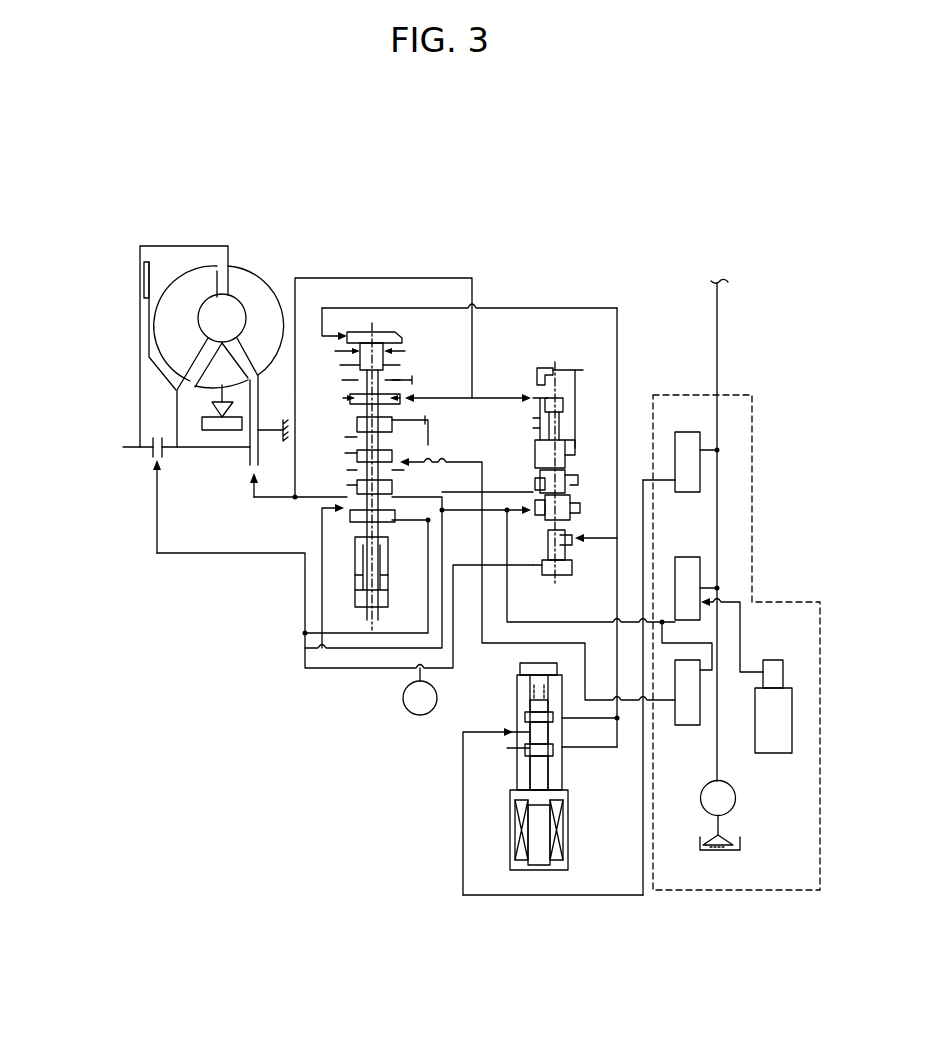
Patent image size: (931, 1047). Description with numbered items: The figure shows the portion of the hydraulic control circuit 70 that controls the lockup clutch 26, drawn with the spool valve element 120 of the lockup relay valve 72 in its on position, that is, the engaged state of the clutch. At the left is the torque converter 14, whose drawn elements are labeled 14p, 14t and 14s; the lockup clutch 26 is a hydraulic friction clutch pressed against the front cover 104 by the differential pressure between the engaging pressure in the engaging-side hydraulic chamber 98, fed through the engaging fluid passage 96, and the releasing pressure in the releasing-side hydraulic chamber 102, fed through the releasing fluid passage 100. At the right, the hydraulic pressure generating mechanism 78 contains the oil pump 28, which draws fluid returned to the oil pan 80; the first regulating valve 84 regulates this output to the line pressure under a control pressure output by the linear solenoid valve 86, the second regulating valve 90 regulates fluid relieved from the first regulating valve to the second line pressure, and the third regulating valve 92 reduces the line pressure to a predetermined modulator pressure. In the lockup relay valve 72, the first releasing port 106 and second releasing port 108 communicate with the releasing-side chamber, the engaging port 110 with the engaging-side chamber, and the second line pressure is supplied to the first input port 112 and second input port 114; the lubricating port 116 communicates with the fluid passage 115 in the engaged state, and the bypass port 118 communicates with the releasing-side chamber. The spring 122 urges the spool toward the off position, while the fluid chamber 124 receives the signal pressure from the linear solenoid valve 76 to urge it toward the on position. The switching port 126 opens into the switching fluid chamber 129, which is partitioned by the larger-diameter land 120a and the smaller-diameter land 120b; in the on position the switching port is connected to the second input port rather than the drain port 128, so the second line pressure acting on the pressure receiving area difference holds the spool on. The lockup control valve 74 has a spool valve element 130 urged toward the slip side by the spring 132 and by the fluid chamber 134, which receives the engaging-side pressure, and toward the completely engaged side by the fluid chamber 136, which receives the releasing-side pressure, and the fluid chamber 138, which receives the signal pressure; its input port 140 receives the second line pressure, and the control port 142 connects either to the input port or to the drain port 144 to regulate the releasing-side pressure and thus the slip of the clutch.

The hydraulic control circuit 70 is at (437, 166).
The torque converter 14 is at (266, 246).
The pump impeller 14p is at (252, 288).
The turbine impeller 14t is at (180, 324).
The stator impeller 14s is at (218, 378).
The engaging-side hydraulic chamber 98 is at (173, 258).
The front cover 104 is at (141, 271).
The lockup clutch 26 is at (128, 293).
The releasing-side hydraulic chamber 102 is at (156, 414).
The engaging fluid passage 96 is at (256, 421).
The releasing fluid passage 100 is at (150, 456).
The lockup relay valve 72 is at (432, 361).
The fluid chamber 124 is at (378, 333).
The land 120b is at (384, 358).
The switching fluid chamber 129 is at (352, 368).
The switching port 126 is at (350, 380).
The drain port 128 is at (403, 370).
The second input port 114 is at (396, 403).
The land 120a is at (357, 410).
The bypass port 118 is at (394, 424).
The spool valve element 120 is at (366, 440).
The first releasing port 106 is at (396, 445).
The engaging port 110 is at (352, 470).
The lubricating port 116 is at (396, 470).
The first input port 112 is at (352, 518).
The second releasing port 108 is at (392, 530).
The spring 122 is at (388, 565).
The lockup control valve 74 is at (562, 346).
The fluid chamber 134 is at (538, 386).
The spring 132 is at (537, 448).
The spool valve element 130 is at (566, 448).
The control port 142 is at (537, 480).
The drain port 144 is at (570, 480).
The input port 140 is at (530, 512).
The fluid chamber 138 is at (570, 522).
The fluid chamber 136 is at (560, 573).
The fluid passage 115 is at (497, 646).
The linear solenoid valve 76 is at (577, 782).
The hydraulic pressure generating mechanism 78 is at (740, 394).
The third regulating valve 92 is at (686, 440).
The first regulating valve 84 is at (685, 565).
The second regulating valve 90 is at (686, 715).
The linear solenoid valve 86 is at (776, 745).
The oil pump 28 is at (700, 800).
The oil pan 80 is at (715, 850).